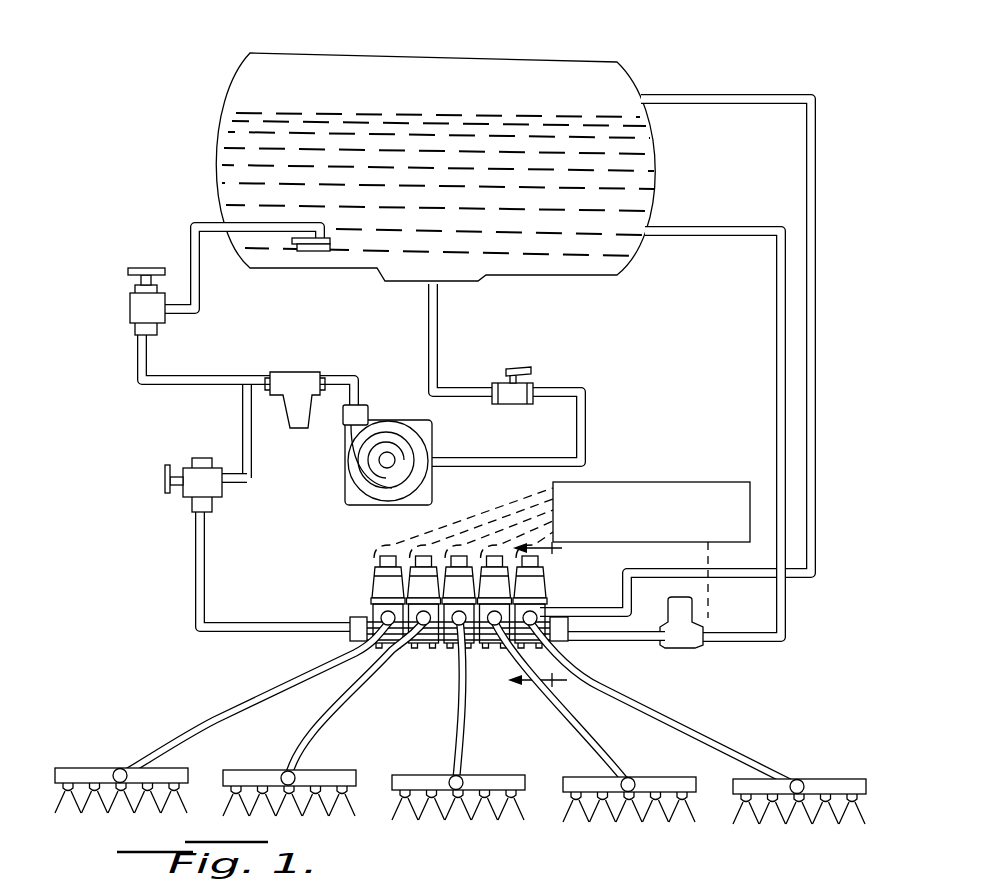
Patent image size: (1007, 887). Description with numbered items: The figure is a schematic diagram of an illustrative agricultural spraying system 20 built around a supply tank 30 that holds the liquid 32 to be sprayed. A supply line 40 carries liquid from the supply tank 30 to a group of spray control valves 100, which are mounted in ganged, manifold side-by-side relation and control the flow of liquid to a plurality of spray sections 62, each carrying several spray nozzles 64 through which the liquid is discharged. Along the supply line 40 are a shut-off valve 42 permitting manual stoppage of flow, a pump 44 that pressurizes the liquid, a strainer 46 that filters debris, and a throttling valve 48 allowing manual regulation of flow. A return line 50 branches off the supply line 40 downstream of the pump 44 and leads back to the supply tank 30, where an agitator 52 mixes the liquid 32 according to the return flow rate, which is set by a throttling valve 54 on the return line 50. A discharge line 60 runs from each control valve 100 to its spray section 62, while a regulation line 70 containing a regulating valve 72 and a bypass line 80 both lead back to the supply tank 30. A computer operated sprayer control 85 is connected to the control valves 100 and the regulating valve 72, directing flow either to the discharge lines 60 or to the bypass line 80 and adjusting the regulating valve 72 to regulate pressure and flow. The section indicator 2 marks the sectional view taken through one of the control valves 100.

The section line 2- 2 is at (546, 625).
The agricultural spraying system 20 is at (200, 92).
The supply tank 30 is at (459, 173).
The liquid 32 is at (540, 235).
The supply line 40 is at (438, 311).
The shut-off valve 42 is at (515, 404).
The pump 44 is at (357, 468).
The strainer 46 is at (290, 378).
The throttling valve 48 is at (198, 495).
The return line 50 is at (160, 381).
The agitator 52 is at (311, 252).
The throttling valve 54 is at (130, 307).
The discharge line 60 is at (752, 712).
The spray section 62 is at (98, 768).
The spray nozzle 64 is at (62, 793).
The regulation line 70 is at (784, 612).
The regulating valve 72 is at (677, 648).
The bypass line 80 is at (818, 497).
The sprayer control 85 is at (688, 481).
The spray control valves 100 is at (368, 580).